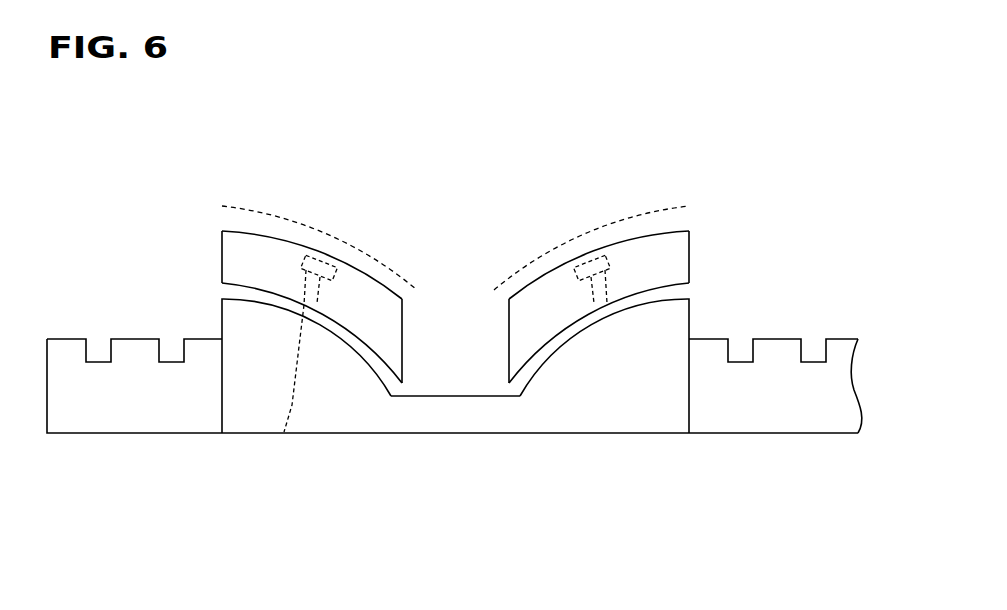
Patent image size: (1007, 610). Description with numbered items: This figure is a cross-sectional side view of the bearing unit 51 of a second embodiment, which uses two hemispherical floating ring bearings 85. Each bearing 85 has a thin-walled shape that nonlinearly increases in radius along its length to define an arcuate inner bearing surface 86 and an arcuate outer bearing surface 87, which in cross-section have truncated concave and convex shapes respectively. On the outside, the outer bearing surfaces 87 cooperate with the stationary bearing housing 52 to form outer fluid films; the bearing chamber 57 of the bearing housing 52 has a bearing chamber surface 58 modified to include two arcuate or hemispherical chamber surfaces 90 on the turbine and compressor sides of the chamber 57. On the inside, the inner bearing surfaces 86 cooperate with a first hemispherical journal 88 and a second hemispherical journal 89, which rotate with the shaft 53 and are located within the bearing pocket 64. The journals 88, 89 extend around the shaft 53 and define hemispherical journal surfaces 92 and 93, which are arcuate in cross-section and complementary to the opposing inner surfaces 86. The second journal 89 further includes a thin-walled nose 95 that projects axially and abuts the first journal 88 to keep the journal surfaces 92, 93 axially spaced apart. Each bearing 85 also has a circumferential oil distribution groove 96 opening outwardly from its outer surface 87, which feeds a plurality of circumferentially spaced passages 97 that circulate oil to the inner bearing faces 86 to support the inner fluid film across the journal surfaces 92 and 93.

The bearing unit 51 is at (186, 185).
The bearing housing 52 is at (368, 250).
The shaft 53 is at (783, 433).
The bearing chamber 57 is at (171, 254).
The bearing chamber surface 58 is at (670, 207).
The bearing pocket 64 is at (493, 438).
The hemispherical floating ring bearing 85 is at (257, 257).
The inner bearing surface 86 is at (243, 286).
The outer bearing surface 87 is at (297, 244).
The first hemispherical journal 88 is at (338, 390).
The second hemispherical journal 89 is at (644, 404).
The hemispherical chamber surface 90 is at (286, 213).
The journal surface of first journal 92 is at (367, 362).
The journal surface of second journal 93 is at (606, 318).
The thin-walled nose 95 is at (467, 420).
The circumferential oil distribution groove 96 is at (330, 254).
The oil passage 97 is at (284, 432).